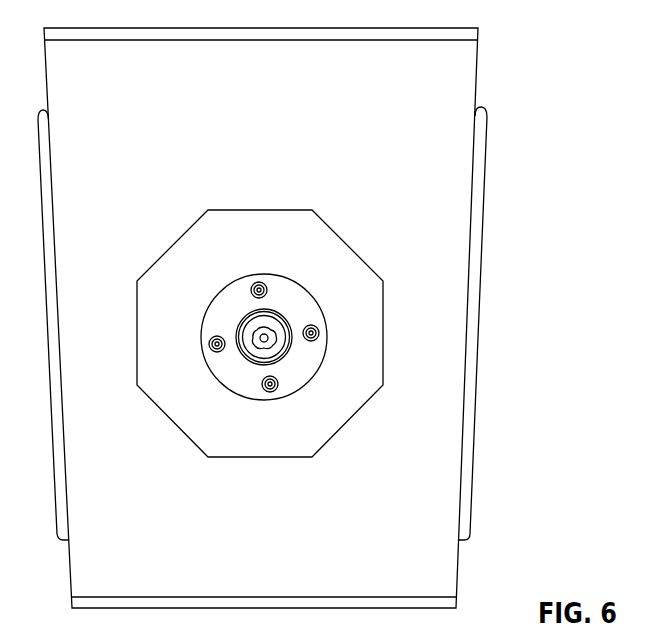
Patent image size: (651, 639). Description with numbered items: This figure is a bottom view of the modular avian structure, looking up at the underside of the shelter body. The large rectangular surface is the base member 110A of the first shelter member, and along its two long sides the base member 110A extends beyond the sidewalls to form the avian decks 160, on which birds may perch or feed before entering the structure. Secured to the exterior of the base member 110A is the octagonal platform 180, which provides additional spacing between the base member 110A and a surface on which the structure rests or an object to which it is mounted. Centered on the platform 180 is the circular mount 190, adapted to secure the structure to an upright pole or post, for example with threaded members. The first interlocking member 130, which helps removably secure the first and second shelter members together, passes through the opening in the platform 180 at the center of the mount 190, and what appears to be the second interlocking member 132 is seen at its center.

The base member 110A is at (478, 73).
The avian decks 160 is at (486, 144).
The platform 180 is at (384, 336).
The mount 190 is at (308, 375).
The first interlocking member 130 is at (243, 337).
The shaft 132 is at (264, 340).